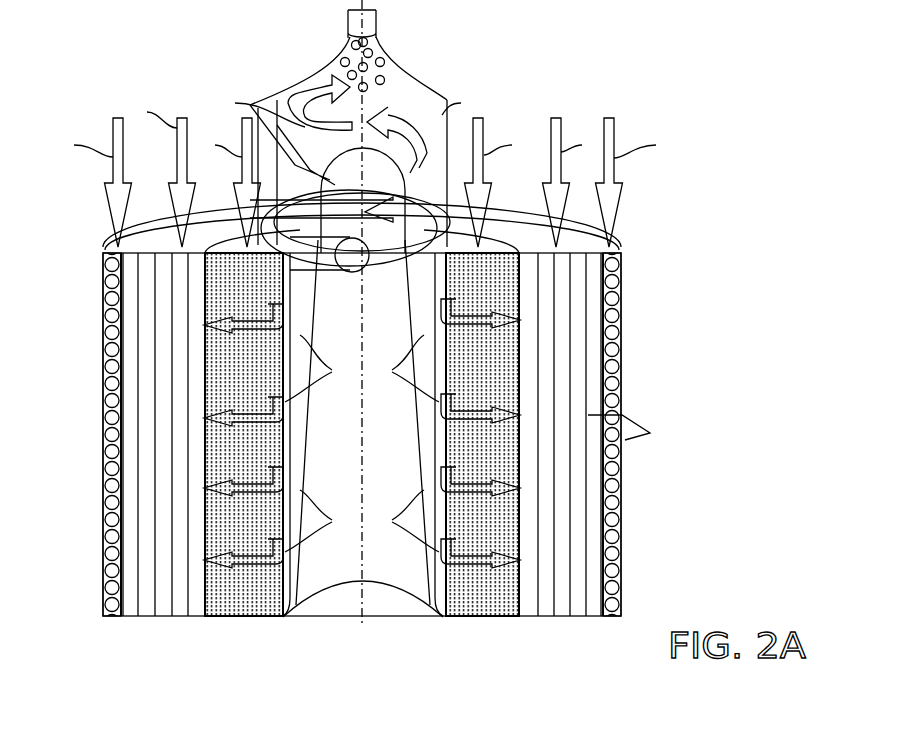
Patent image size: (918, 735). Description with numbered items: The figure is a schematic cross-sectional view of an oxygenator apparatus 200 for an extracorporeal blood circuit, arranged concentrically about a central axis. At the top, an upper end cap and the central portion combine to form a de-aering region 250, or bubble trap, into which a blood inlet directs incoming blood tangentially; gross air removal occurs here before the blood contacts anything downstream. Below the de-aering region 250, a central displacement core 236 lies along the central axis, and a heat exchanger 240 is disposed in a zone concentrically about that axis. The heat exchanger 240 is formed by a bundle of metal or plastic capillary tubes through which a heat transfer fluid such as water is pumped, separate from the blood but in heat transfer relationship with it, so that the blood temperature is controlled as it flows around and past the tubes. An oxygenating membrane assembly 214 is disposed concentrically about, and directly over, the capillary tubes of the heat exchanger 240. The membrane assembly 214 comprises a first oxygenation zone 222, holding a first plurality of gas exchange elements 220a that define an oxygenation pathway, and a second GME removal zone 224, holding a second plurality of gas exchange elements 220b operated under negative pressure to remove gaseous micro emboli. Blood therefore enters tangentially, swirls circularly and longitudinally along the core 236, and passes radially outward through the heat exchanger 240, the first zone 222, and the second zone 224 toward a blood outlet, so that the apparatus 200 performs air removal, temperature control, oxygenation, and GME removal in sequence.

The oxygenator apparatus 200 is at (124, 47).
The de-aering region 250 is at (407, 73).
The oxygenating membrane assembly 214 is at (643, 431).
The first plurality of gas exchange elements 220a is at (138, 568).
The second plurality of gas exchange elements 220b is at (106, 473).
The first oxygenation zone 222 is at (180, 605).
The second GME removal zone 224 is at (108, 616).
The heat exchanger 240 is at (255, 605).
The central displacement core 236 is at (333, 590).